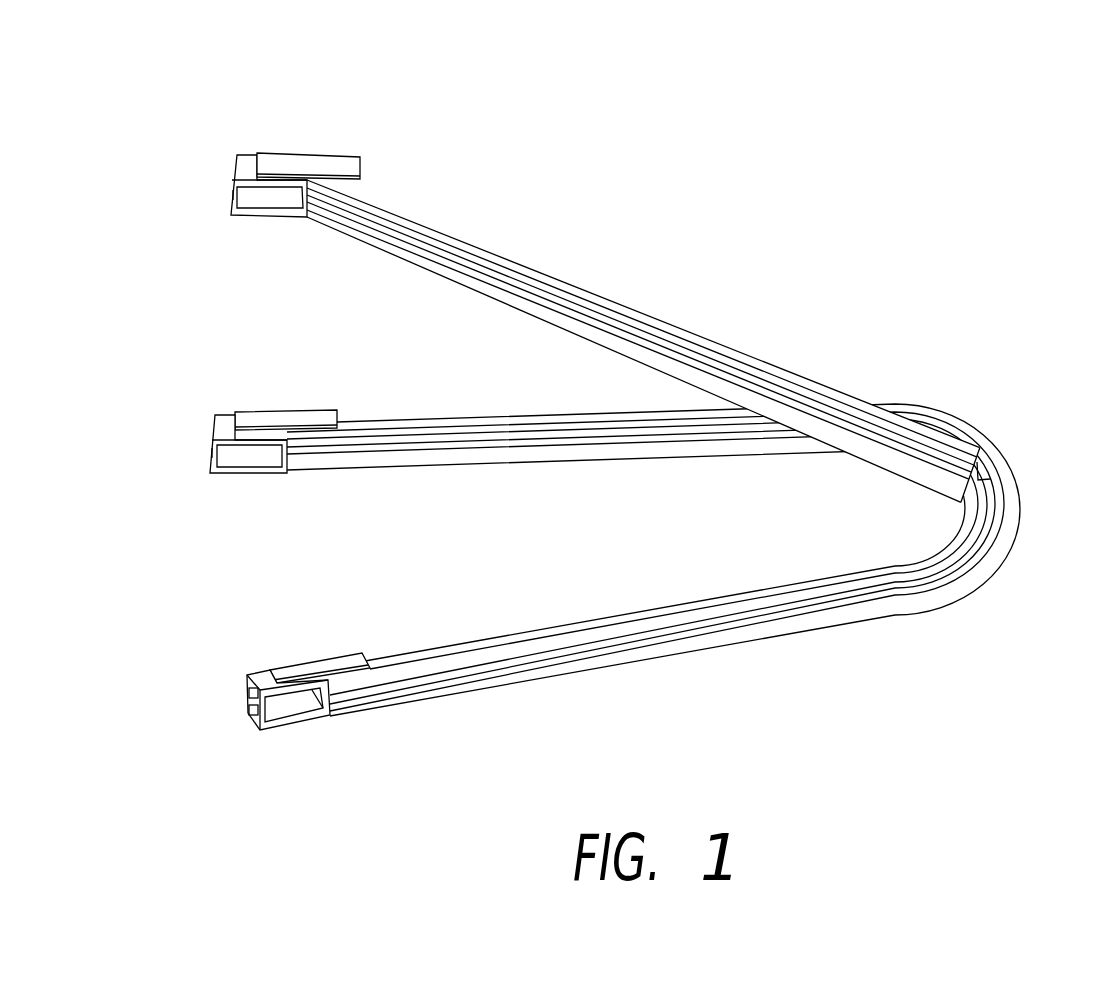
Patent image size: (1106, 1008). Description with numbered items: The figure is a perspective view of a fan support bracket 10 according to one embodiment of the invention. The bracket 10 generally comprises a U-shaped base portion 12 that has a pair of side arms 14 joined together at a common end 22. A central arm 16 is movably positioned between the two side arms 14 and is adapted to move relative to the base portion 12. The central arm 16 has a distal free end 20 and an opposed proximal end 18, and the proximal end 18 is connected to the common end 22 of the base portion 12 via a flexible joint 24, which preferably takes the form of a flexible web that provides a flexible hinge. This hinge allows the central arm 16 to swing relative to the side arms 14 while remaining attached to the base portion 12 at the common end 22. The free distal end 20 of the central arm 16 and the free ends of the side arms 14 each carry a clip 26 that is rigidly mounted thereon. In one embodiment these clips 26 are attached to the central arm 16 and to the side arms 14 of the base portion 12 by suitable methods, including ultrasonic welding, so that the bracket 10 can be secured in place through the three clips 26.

The fan support bracket 10 is at (913, 228).
The U-shaped base portion 12 is at (687, 560).
The side arms 14 is at (291, 484).
The central arm 16 is at (684, 369).
The proximal end 18 is at (966, 514).
The distal free end 20 is at (302, 227).
The common end 22 is at (1019, 520).
The flexible joint 24 is at (987, 458).
The clip 26 is at (246, 151).